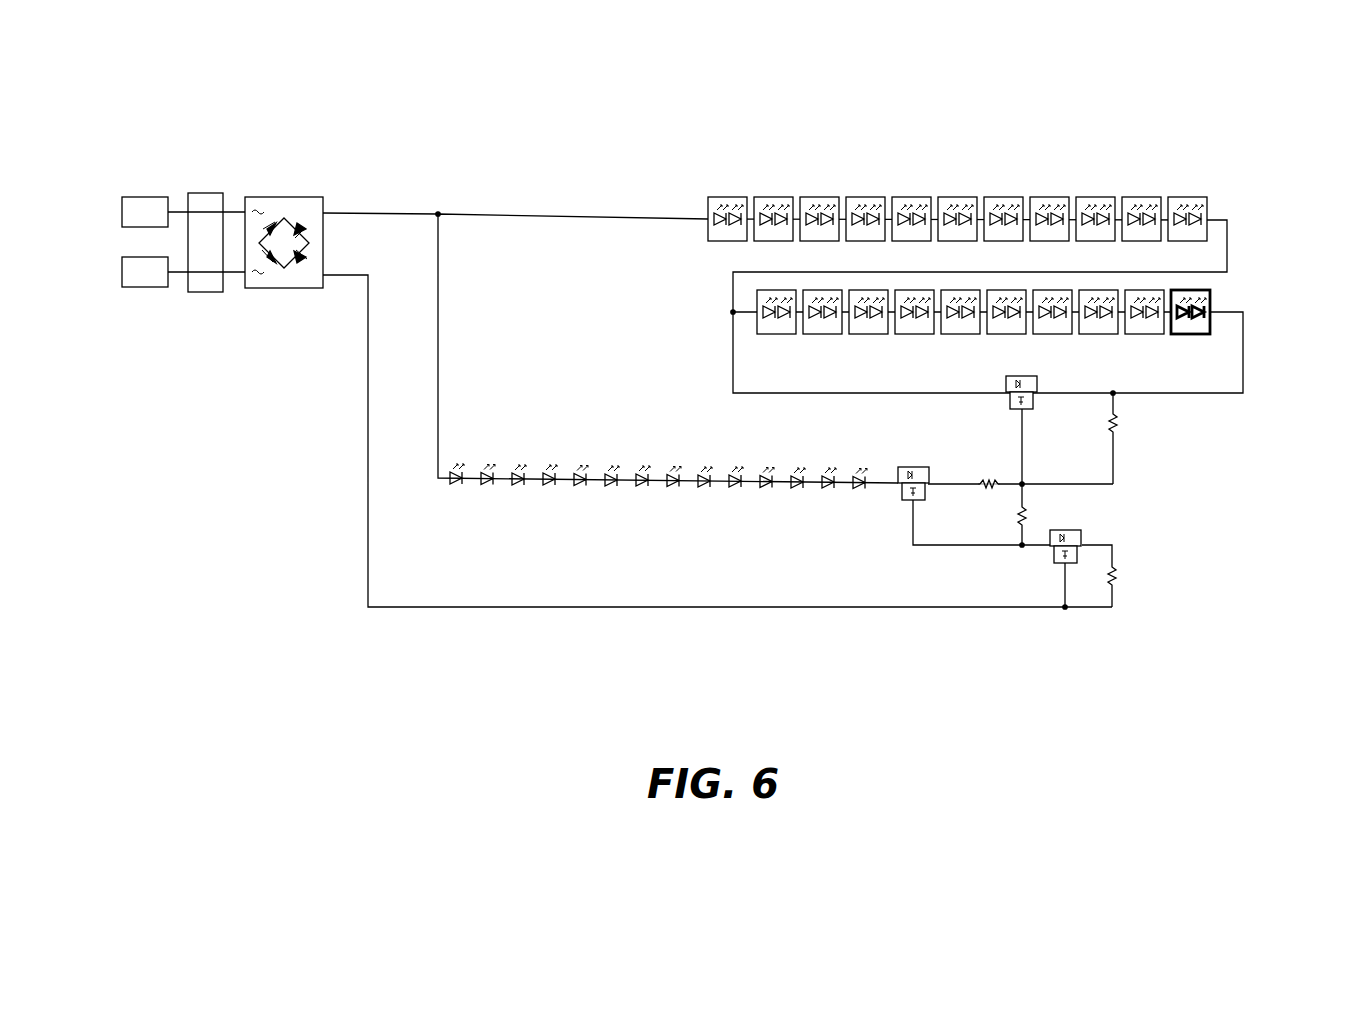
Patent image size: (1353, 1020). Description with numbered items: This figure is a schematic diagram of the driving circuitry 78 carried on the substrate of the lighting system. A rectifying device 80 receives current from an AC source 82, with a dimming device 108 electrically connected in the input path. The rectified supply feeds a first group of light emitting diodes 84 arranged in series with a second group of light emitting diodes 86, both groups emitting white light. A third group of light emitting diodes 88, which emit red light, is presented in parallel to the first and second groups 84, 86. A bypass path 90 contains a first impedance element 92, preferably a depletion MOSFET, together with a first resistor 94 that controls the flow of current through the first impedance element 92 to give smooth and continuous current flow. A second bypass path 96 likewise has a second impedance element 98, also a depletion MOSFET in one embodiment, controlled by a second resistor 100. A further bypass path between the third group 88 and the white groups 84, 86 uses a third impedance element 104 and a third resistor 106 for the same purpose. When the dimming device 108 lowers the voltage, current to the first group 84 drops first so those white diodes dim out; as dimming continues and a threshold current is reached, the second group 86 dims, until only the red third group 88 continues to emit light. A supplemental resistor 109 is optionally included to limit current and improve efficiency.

The driving circuitry 78 is at (667, 147).
The rectifying device 80 is at (285, 197).
The AC source 82 is at (122, 150).
The first group of light emitting diodes 84 is at (1040, 153).
The second group of light emitting diodes 86 is at (1238, 303).
The third group of light emitting diodes 88 is at (685, 448).
The bypass path 90 is at (966, 469).
The first impedance element 92 is at (1040, 378).
The first resistor 94 is at (1115, 425).
The second bypass path 96 is at (1157, 575).
The second impedance element 98 is at (1065, 530).
The second resistor 100 is at (1112, 580).
The third impedance element 104 is at (897, 467).
The third resistor 106 is at (1015, 513).
The dimming device 108 is at (207, 193).
The supplemental resistor 109 is at (995, 482).